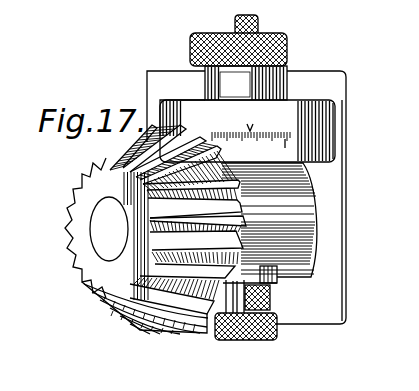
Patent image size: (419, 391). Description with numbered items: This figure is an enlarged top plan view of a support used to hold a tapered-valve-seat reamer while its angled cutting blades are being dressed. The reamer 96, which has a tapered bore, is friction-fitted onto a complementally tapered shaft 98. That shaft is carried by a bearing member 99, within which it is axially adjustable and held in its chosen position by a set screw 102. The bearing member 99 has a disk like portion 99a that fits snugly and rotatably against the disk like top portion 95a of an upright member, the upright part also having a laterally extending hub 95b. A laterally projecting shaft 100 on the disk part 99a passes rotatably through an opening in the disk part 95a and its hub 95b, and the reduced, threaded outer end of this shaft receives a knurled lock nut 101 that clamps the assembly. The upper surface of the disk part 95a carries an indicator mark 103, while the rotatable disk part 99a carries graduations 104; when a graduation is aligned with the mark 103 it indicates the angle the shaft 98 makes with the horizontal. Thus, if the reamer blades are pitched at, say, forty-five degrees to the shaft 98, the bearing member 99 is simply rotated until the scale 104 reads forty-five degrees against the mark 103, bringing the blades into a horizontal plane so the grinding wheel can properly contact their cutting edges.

The reamer 96 is at (113, 312).
The tapered shaft 98 is at (103, 232).
The bearing member 99 is at (313, 253).
The disk like portion 99a is at (322, 150).
The disk like top portion 95a is at (320, 112).
The hub 95b is at (288, 85).
The shaft 100 is at (258, 17).
The knurled lock nut 101 is at (289, 48).
The set screw 102 is at (276, 314).
The indicator mark 103 is at (250, 125).
The graduations 104 is at (288, 147).